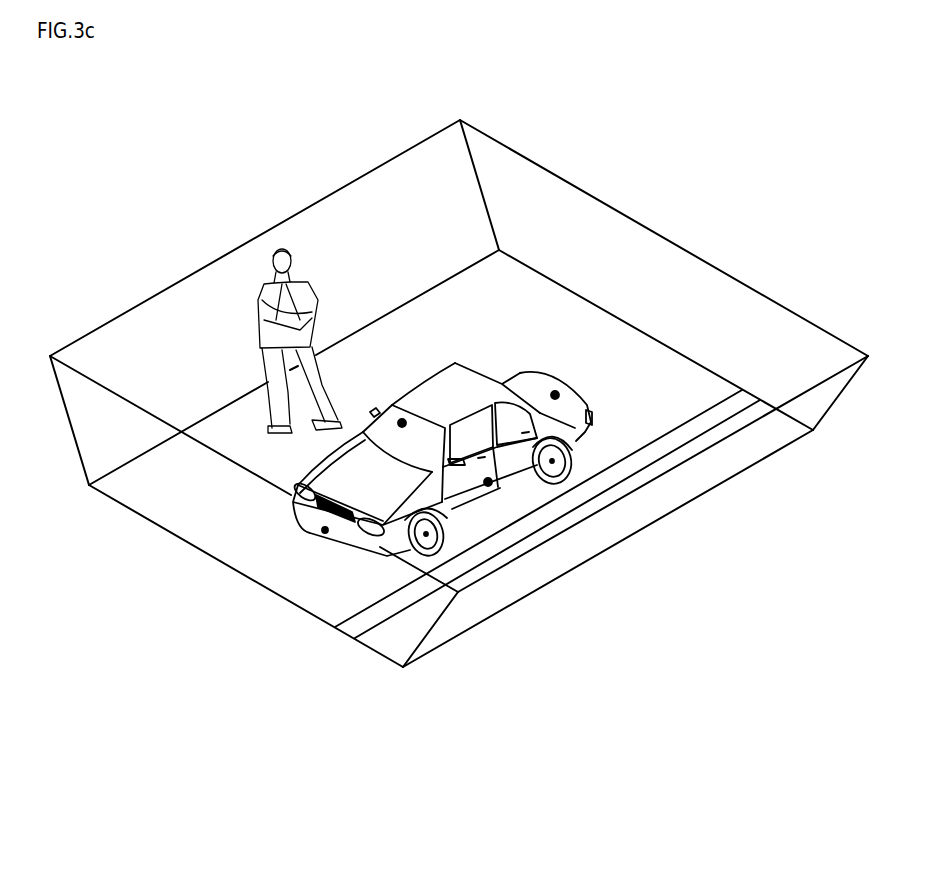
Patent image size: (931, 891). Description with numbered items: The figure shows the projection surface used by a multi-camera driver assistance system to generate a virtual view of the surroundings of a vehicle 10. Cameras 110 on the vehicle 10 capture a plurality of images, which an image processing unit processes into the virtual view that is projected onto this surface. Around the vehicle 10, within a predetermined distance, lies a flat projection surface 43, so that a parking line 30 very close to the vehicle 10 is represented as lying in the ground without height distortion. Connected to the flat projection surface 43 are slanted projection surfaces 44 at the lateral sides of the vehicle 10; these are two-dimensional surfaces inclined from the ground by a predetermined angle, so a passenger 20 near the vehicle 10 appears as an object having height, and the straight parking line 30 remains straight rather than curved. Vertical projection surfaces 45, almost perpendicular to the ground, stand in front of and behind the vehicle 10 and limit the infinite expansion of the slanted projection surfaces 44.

The vehicle 10 is at (494, 404).
The passenger 20 is at (281, 247).
The parking line 30 is at (620, 478).
The flat projection surface 43 is at (247, 578).
The slanted projection surface 44 is at (430, 632).
The vertical projection surface 45 is at (122, 395).
The camera 110 is at (560, 390).